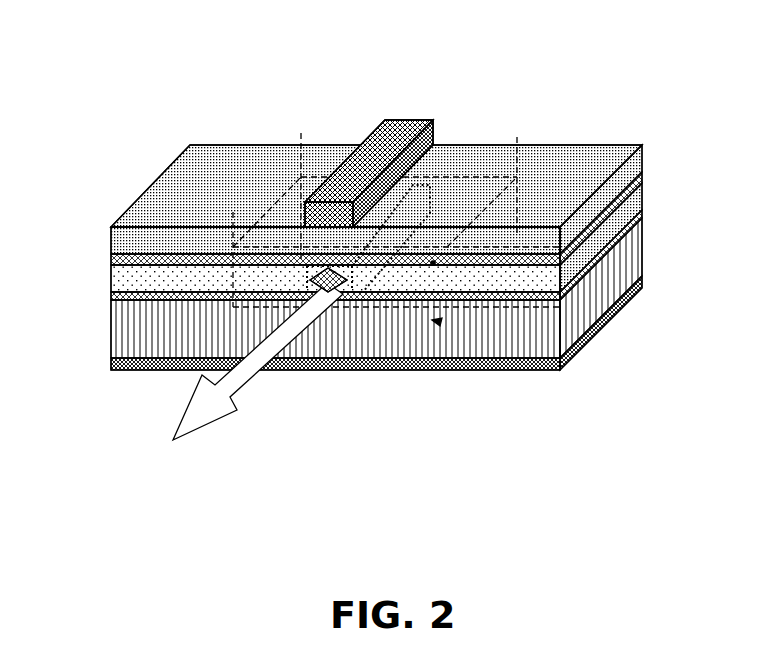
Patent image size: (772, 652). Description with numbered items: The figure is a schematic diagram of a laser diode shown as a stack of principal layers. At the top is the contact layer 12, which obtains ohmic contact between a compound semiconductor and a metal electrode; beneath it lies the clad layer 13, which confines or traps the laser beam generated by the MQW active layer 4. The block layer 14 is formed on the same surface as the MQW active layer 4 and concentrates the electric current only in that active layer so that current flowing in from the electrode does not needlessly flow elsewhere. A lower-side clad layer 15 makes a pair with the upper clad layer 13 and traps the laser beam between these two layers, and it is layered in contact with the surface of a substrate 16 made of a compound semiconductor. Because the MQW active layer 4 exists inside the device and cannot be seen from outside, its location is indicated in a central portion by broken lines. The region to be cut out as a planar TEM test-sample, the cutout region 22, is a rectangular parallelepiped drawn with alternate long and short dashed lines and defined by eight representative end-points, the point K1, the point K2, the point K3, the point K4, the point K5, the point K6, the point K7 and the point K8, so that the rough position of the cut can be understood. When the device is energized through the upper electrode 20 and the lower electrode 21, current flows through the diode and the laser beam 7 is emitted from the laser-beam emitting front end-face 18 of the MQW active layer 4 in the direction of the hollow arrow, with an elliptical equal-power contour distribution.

The contact layer 12 is at (416, 156).
The clad layer 13 is at (642, 180).
The block layer 14 is at (638, 202).
The lower-side clad layer 15 is at (641, 217).
The substrate 16 is at (639, 257).
The lower electrode 21 is at (622, 308).
The upper electrode 20 is at (407, 128).
The cutout region 22 is at (275, 200).
The laser-beam emitting front end-face 18 is at (333, 283).
The MQW active layer 4 is at (367, 278).
The laser beam 7 is at (238, 392).
The point K1 is at (231, 212).
The point K2 is at (301, 133).
The point K3 is at (517, 137).
The point K4 is at (447, 247).
The point K5 is at (220, 257).
The point K6 is at (433, 263).
The point K7 is at (436, 322).
The point K8 is at (218, 318).